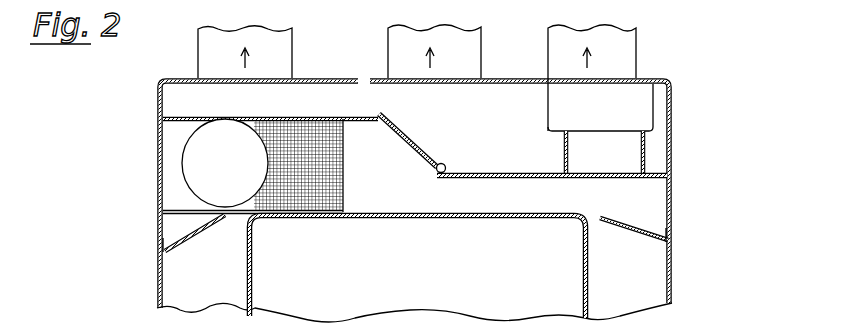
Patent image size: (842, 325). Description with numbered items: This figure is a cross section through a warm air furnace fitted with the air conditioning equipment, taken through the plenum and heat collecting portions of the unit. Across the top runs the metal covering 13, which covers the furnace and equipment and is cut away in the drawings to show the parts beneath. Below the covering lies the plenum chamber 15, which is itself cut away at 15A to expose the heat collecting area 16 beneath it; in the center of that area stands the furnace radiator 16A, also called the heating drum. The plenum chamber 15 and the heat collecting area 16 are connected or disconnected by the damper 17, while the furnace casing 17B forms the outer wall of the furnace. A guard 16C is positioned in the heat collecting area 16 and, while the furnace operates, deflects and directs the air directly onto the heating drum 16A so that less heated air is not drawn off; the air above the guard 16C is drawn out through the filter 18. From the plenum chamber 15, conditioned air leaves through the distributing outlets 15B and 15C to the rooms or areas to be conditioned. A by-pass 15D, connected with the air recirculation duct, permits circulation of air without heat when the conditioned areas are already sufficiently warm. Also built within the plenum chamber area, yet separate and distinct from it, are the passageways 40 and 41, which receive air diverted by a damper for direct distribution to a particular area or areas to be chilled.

The metal covering 13 is at (318, 78).
The plenum chamber 15 is at (332, 124).
The cut away portion of plenum chamber 15A is at (517, 159).
The distributing outlet 15B is at (245, 52).
The distributing outlet 15C is at (434, 51).
The by-pass 15D is at (225, 163).
The heat collecting area 16 is at (414, 251).
The furnace radiator 16A is at (418, 267).
The guard 16C is at (188, 230).
The damper 17 is at (405, 134).
The furnace casing 17B is at (158, 243).
The filter 18 is at (343, 153).
The passageway 40 is at (600, 78).
The passageway 41 is at (604, 152).